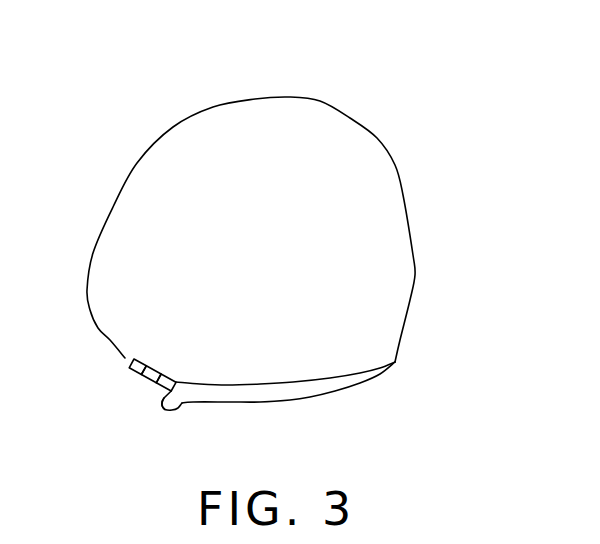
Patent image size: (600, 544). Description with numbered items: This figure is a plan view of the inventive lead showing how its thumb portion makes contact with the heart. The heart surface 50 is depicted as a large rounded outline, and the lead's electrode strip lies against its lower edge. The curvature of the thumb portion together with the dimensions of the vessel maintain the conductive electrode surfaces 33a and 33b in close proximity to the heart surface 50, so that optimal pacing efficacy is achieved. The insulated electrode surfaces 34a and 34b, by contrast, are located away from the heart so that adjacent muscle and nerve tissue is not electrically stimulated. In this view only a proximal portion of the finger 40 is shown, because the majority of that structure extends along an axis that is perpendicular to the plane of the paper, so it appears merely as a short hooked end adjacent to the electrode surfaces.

The heart surface 50 is at (397, 230).
The finger 40 is at (180, 418).
The conductive electrode surface 33a is at (168, 376).
The conductive electrode surface 33b is at (150, 368).
The insulated electrode surface 34a is at (163, 394).
The insulated electrode surface 34b is at (137, 383).